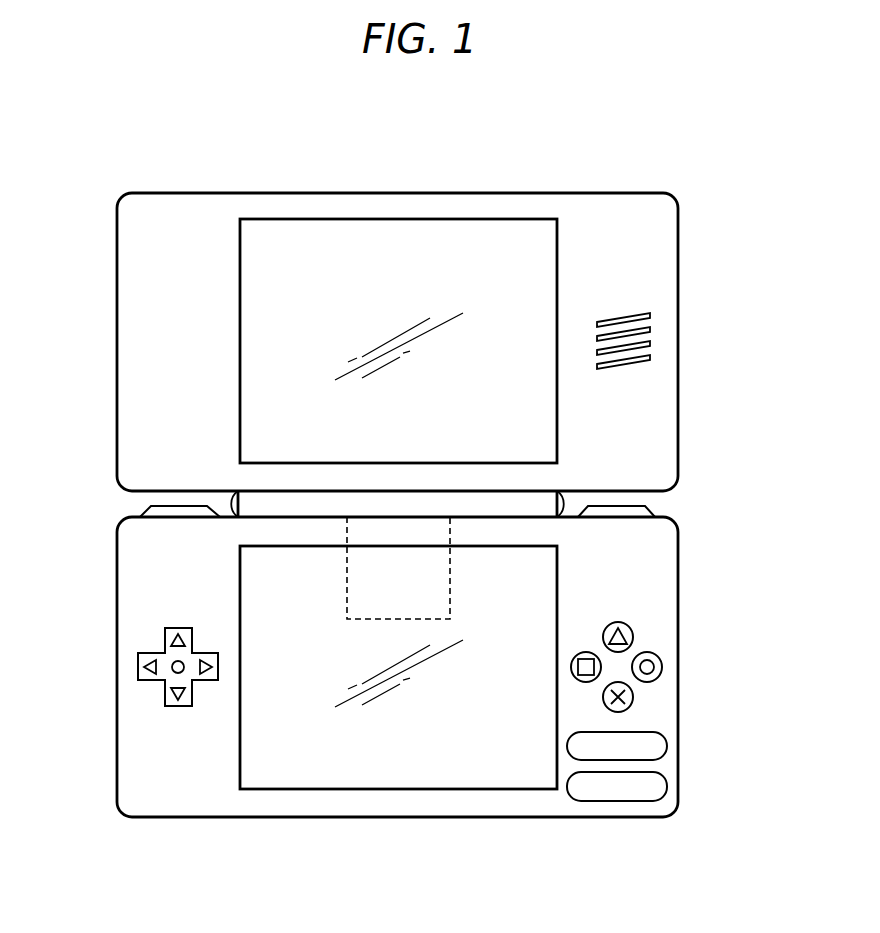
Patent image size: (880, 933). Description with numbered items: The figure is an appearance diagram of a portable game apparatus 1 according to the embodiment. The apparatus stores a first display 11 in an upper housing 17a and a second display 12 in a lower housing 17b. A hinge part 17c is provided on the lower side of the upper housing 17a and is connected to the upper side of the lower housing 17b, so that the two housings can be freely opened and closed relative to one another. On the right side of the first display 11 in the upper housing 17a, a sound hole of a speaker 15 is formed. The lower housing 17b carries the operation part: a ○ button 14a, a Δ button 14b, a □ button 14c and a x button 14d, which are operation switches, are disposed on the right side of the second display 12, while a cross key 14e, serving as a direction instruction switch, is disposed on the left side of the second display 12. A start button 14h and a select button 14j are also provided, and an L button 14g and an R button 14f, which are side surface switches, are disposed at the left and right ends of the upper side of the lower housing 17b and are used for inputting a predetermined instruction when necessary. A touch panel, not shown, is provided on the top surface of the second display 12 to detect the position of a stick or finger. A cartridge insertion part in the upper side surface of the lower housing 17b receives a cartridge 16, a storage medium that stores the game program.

The portable game apparatus 1 is at (413, 507).
The first display 11 is at (310, 218).
The second display 12 is at (280, 790).
The ○ button 14a is at (662, 667).
The Δ button 14b is at (626, 626).
The □ button 14c is at (587, 652).
The x button 14d is at (633, 700).
The cross key 14e is at (140, 668).
The R button 14f is at (653, 508).
The L button 14g is at (145, 510).
The start button 14h is at (668, 745).
The select button 14j is at (668, 786).
The speaker 15 is at (621, 319).
The cartridge 16 is at (335, 582).
The upper housing 17a is at (587, 192).
The lower housing 17b is at (522, 818).
The hinge part 17c is at (565, 505).